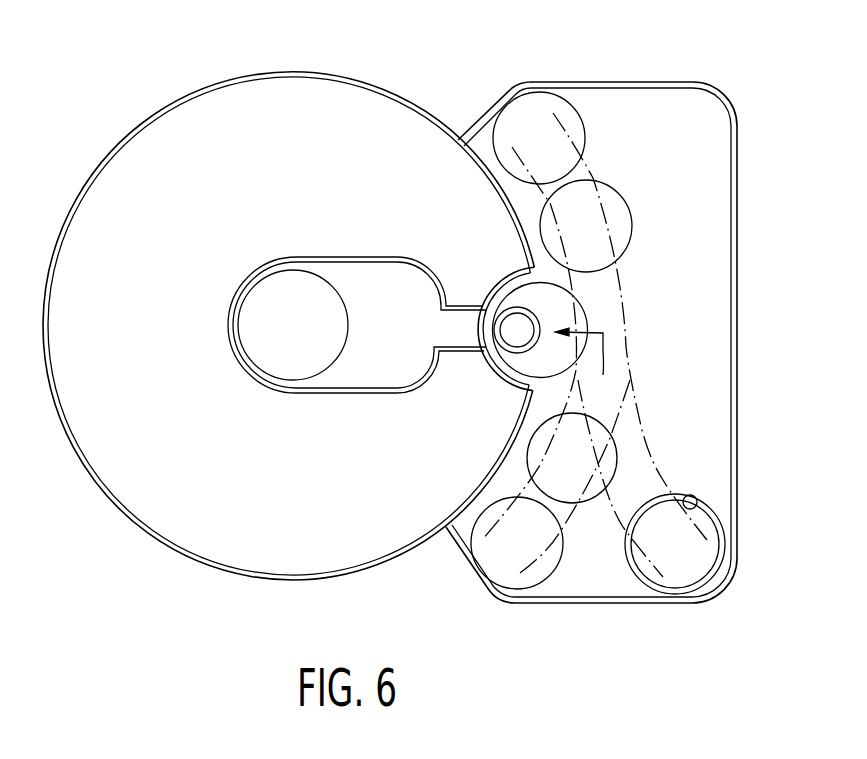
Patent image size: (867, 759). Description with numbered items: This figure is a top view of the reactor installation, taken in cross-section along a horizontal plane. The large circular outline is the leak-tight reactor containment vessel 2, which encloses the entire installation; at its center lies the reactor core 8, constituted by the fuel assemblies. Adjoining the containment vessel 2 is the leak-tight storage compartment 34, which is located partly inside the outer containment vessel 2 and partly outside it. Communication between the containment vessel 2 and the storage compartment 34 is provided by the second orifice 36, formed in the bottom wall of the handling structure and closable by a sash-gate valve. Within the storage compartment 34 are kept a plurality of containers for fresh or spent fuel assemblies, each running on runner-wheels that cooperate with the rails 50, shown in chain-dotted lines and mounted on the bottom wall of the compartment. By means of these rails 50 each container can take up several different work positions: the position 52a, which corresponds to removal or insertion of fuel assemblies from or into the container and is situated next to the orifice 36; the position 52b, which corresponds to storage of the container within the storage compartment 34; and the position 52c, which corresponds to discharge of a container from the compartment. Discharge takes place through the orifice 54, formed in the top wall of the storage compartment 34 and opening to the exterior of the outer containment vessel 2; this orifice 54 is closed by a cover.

The leak-tight reactor containment vessel 2 is at (378, 85).
The reactor core 8 is at (298, 342).
The leak-tight storage compartment 34 is at (520, 83).
The second orifice 36 is at (497, 345).
The rails 50 is at (636, 320).
The position corresponding to removal or insertion of fuel assemblies 52a is at (510, 277).
The position corresponding to storage of the container 52b is at (585, 138).
The position corresponding to discharge of a container 52c is at (632, 565).
The orifice 54 is at (702, 497).